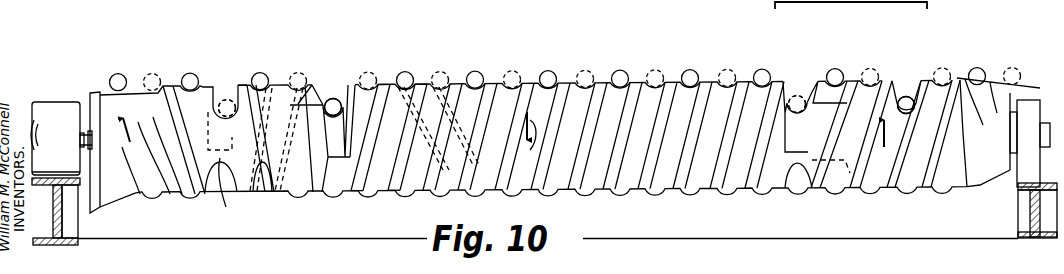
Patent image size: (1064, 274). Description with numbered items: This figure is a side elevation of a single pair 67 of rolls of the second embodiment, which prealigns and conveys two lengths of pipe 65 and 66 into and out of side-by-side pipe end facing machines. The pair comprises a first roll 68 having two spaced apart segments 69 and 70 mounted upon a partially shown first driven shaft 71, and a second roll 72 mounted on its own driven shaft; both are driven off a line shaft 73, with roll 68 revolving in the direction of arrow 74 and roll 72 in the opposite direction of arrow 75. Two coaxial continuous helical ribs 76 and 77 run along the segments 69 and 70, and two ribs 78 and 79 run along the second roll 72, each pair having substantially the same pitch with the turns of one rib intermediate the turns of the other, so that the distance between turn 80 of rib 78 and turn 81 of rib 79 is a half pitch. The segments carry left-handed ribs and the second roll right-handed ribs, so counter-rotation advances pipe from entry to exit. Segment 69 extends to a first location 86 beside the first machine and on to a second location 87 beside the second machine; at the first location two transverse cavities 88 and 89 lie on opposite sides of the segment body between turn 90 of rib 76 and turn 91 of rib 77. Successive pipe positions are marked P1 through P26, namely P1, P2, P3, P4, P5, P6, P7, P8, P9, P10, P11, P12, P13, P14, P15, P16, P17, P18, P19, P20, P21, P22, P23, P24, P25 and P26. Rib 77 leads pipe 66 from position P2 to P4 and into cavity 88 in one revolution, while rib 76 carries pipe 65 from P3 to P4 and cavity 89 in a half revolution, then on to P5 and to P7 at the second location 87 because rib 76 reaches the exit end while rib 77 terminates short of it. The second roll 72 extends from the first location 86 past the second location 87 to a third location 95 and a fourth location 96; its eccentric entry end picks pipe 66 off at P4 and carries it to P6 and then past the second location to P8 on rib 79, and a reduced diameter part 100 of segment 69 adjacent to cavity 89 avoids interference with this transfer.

The pipe 65 is at (114, 74).
The pipe 66 is at (337, 72).
The pair of rolls 67 is at (765, 189).
The first roll 68 is at (133, 195).
The segment 69 is at (100, 95).
The segment 70 is at (998, 97).
The first driven shaft 71 is at (88, 130).
The second roll 72 is at (587, 120).
The line shaft 73 is at (50, 122).
The arrow 74 is at (113, 133).
The arrow 75 is at (523, 144).
The helical rib 76 is at (167, 192).
The helical rib 77 is at (198, 195).
The helical rib 78 is at (350, 195).
The helical rib 79 is at (388, 195).
The turn 80 is at (385, 84).
The turn 81 is at (420, 84).
The first location 86 is at (227, 108).
The second location 87 is at (333, 87).
The transverse cavity 88 is at (233, 118).
The transverse cavity 89 is at (230, 195).
The turn 90 is at (205, 88).
The turn 91 is at (246, 80).
The third location 95 is at (798, 86).
The fourth location 96 is at (906, 86).
The reduced diameter part 100 is at (252, 195).
The position P1 is at (113, 49).
The position P2 is at (152, 59).
The position P3 is at (188, 49).
The position P4 is at (225, 72).
The position P5 is at (258, 49).
The position P6 is at (296, 59).
The position P7 is at (332, 62).
The position P8 is at (368, 58).
The position P9 is at (403, 48).
The position P10 is at (441, 58).
The position P11 is at (472, 48).
The position P12 is at (511, 58).
The position P13 is at (548, 48).
The position P14 is at (589, 57).
The position P15 is at (619, 47).
The position P16 is at (656, 57).
The position P17 is at (692, 47).
The position P18 is at (729, 57).
The position P19 is at (762, 47).
The position P20 is at (800, 68).
The position P21 is at (836, 47).
The position P22 is at (875, 54).
The position P23 is at (908, 61).
The position P24 is at (945, 54).
The position P25 is at (978, 44).
The position P26 is at (1013, 54).